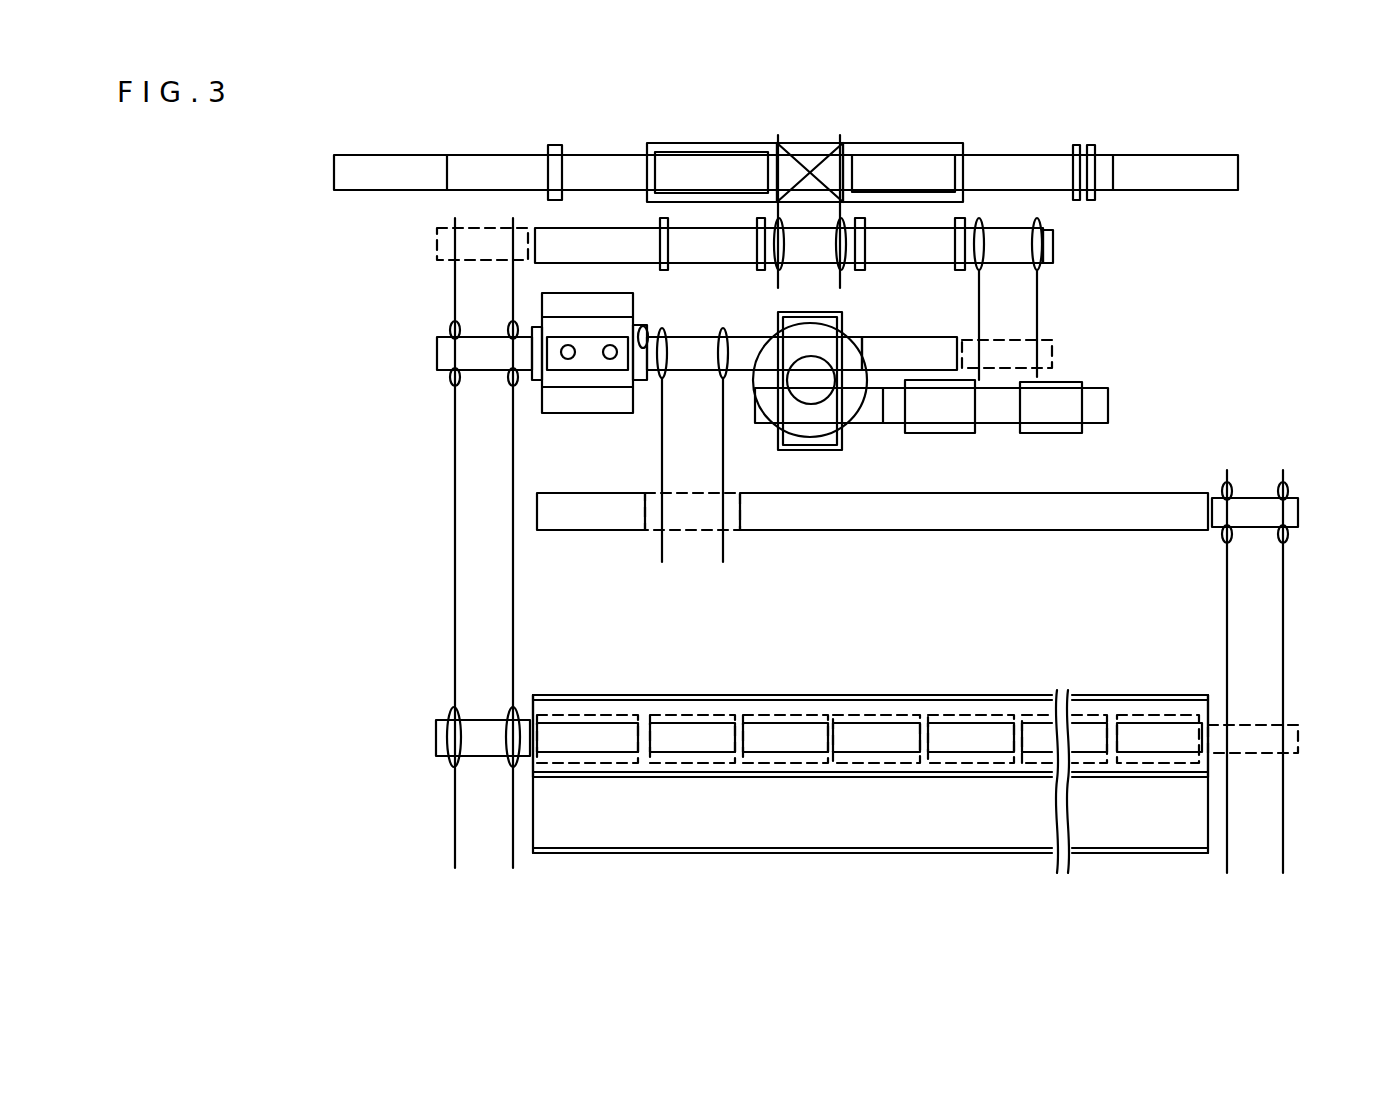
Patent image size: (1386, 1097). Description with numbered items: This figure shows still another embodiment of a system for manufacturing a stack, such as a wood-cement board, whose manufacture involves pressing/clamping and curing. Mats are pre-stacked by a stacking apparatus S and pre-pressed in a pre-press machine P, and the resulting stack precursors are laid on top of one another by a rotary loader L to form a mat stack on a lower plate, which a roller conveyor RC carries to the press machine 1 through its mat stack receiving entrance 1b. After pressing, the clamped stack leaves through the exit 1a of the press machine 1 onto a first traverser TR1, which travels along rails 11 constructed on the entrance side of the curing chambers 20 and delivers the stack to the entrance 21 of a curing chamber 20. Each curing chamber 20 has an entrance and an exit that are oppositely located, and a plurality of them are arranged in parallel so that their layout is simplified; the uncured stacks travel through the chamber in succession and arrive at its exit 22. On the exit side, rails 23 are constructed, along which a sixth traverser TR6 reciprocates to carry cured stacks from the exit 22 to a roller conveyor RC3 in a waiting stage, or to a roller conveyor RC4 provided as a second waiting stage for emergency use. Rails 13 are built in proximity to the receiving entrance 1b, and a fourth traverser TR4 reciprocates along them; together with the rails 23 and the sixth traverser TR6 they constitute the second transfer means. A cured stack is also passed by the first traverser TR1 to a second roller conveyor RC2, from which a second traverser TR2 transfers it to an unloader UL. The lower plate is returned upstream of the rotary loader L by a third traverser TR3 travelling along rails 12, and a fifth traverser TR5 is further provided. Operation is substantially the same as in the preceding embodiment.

The unloader UL is at (821, 118).
The second traverser TR2 is at (807, 237).
The second roller conveyor RC2 is at (592, 238).
The third traverser TR3 is at (1005, 242).
The fifth traverser TR5 is at (437, 243).
The rails 11 is at (455, 613).
The first traverser TR1 is at (437, 352).
The exit of the press machine 1a is at (530, 350).
The press machine 1 is at (577, 403).
The mat stack receiving entrance 1b is at (642, 333).
The fourth traverser TR4 is at (698, 352).
The rails 13 is at (663, 445).
The rotary loader L is at (829, 442).
The pre-press machine P is at (967, 430).
The stacking apparatus S is at (1066, 429).
The roller conveyor RC is at (917, 348).
The rails 12 is at (1040, 317).
The roller conveyor RC4 is at (603, 518).
The roller conveyor RC3 is at (980, 518).
The sixth traverser TR6 is at (1262, 510).
The rails 23 is at (1283, 630).
The curing chamber 20 is at (835, 855).
The entrance of the curing chamber 21 is at (532, 707).
The exit of the curing chamber 22 is at (1205, 710).